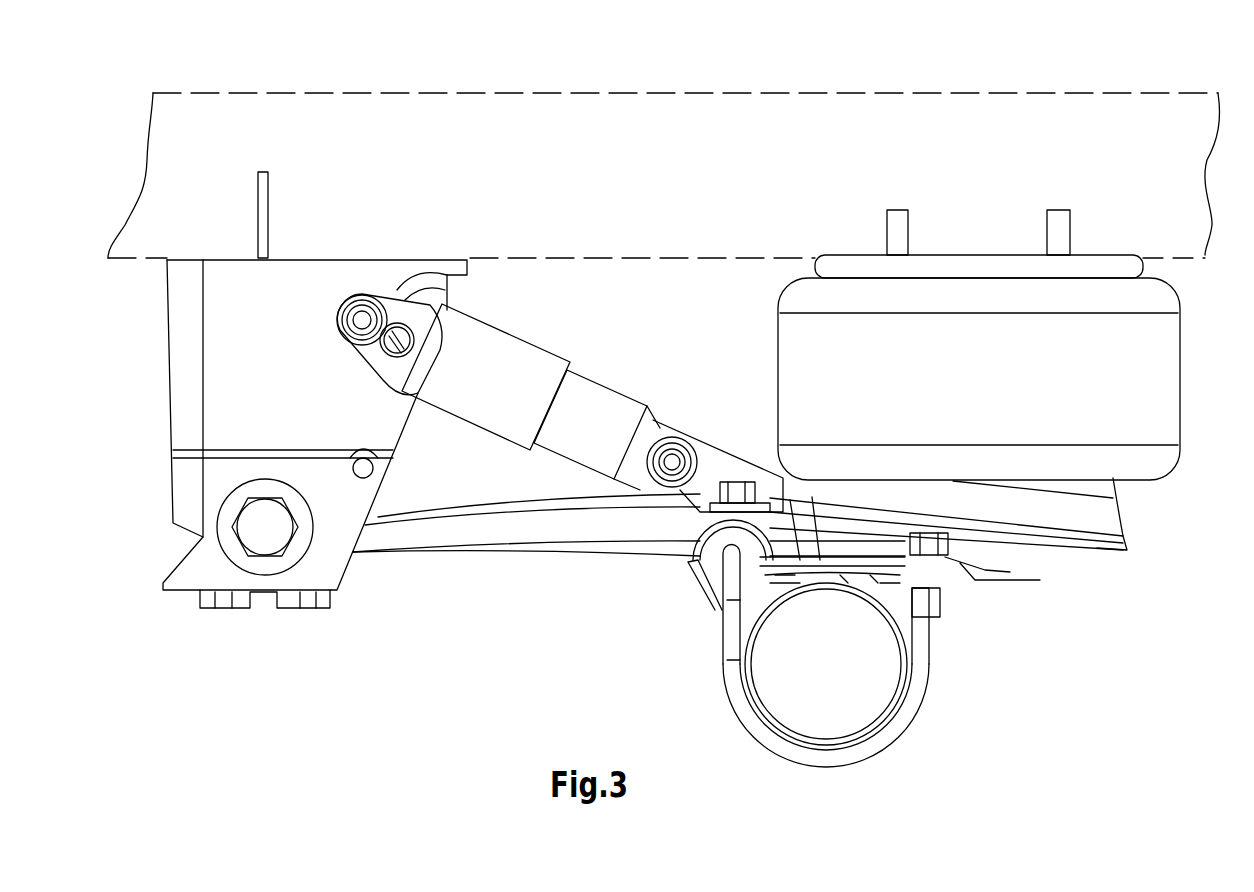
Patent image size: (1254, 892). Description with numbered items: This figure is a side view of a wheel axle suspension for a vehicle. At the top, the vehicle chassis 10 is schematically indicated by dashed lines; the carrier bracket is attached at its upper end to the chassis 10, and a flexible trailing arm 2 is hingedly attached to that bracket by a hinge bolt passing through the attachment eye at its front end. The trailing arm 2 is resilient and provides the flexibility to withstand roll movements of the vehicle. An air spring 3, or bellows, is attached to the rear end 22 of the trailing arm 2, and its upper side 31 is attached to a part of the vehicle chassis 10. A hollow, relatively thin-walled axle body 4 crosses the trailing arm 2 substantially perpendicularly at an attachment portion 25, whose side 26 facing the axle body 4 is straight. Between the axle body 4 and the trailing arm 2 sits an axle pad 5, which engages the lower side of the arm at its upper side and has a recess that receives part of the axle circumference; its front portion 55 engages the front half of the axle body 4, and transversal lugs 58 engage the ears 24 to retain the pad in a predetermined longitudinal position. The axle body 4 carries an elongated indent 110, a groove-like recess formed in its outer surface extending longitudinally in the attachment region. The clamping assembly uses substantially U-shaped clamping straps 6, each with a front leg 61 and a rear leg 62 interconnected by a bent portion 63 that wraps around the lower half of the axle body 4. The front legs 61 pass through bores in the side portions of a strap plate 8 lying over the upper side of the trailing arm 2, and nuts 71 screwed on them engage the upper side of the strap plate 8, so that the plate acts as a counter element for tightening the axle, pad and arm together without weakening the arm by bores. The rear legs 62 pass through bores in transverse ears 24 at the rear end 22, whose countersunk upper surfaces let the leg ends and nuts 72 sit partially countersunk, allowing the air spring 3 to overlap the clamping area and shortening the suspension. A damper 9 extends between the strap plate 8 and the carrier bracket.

The vehicle chassis 10 is at (637, 237).
The damper 9 is at (490, 350).
The strap plate 8 is at (708, 512).
The threaded nut 71 is at (732, 470).
The threaded nut 72 is at (935, 542).
The front portion 55 is at (702, 595).
The trailing arm 2 is at (550, 527).
The rear end 22 is at (1050, 565).
The ear 24 is at (945, 588).
The air spring 3 is at (797, 338).
The upper side 31 is at (1127, 265).
The attachment portion 25 is at (815, 525).
The axle body 4 is at (867, 733).
The axle pad 5 is at (857, 590).
The elongated indent 110 is at (868, 605).
The transversal lug 58 is at (888, 603).
The side 26 is at (783, 597).
The clamping strap 6 is at (827, 687).
The front leg 61 is at (730, 642).
The rear leg 62 is at (920, 647).
The bent portion 63 is at (822, 755).